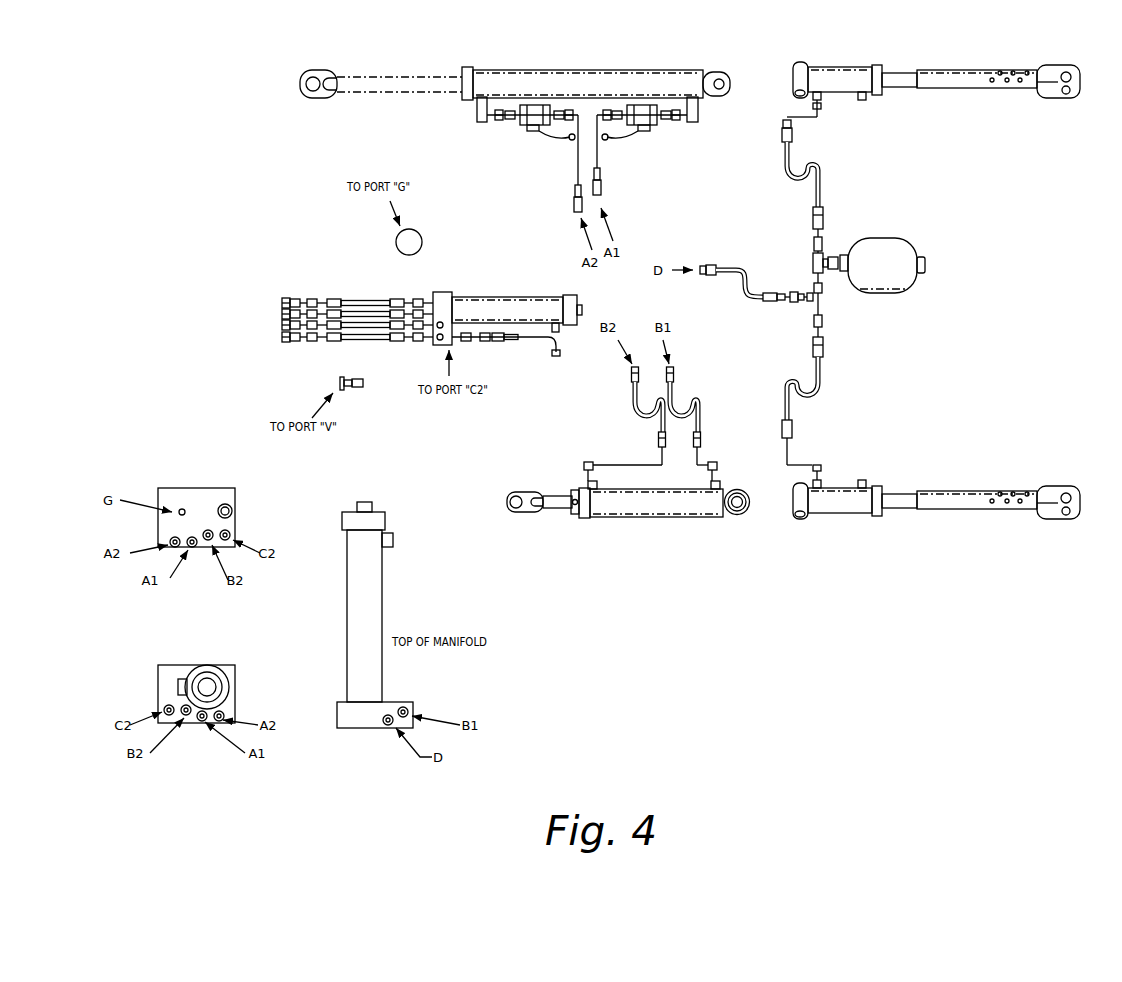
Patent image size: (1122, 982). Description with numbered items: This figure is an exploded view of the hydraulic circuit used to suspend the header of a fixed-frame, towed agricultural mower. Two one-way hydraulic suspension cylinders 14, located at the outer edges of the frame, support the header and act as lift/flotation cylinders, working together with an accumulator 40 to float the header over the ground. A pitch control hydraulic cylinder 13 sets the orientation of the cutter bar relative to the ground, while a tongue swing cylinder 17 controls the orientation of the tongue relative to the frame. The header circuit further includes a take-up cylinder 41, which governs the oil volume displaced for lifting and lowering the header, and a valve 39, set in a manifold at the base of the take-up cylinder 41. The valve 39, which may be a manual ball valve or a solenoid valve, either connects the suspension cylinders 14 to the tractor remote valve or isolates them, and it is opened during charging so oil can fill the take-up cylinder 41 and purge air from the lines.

The pitch control hydraulic cylinder 13 is at (637, 503).
The hydraulic suspension cylinder 14 is at (955, 500).
The tongue swing cylinder 17 is at (567, 87).
The valve 39 is at (233, 503).
The accumulator 40 is at (893, 277).
The take-up cylinder 41 is at (477, 295).